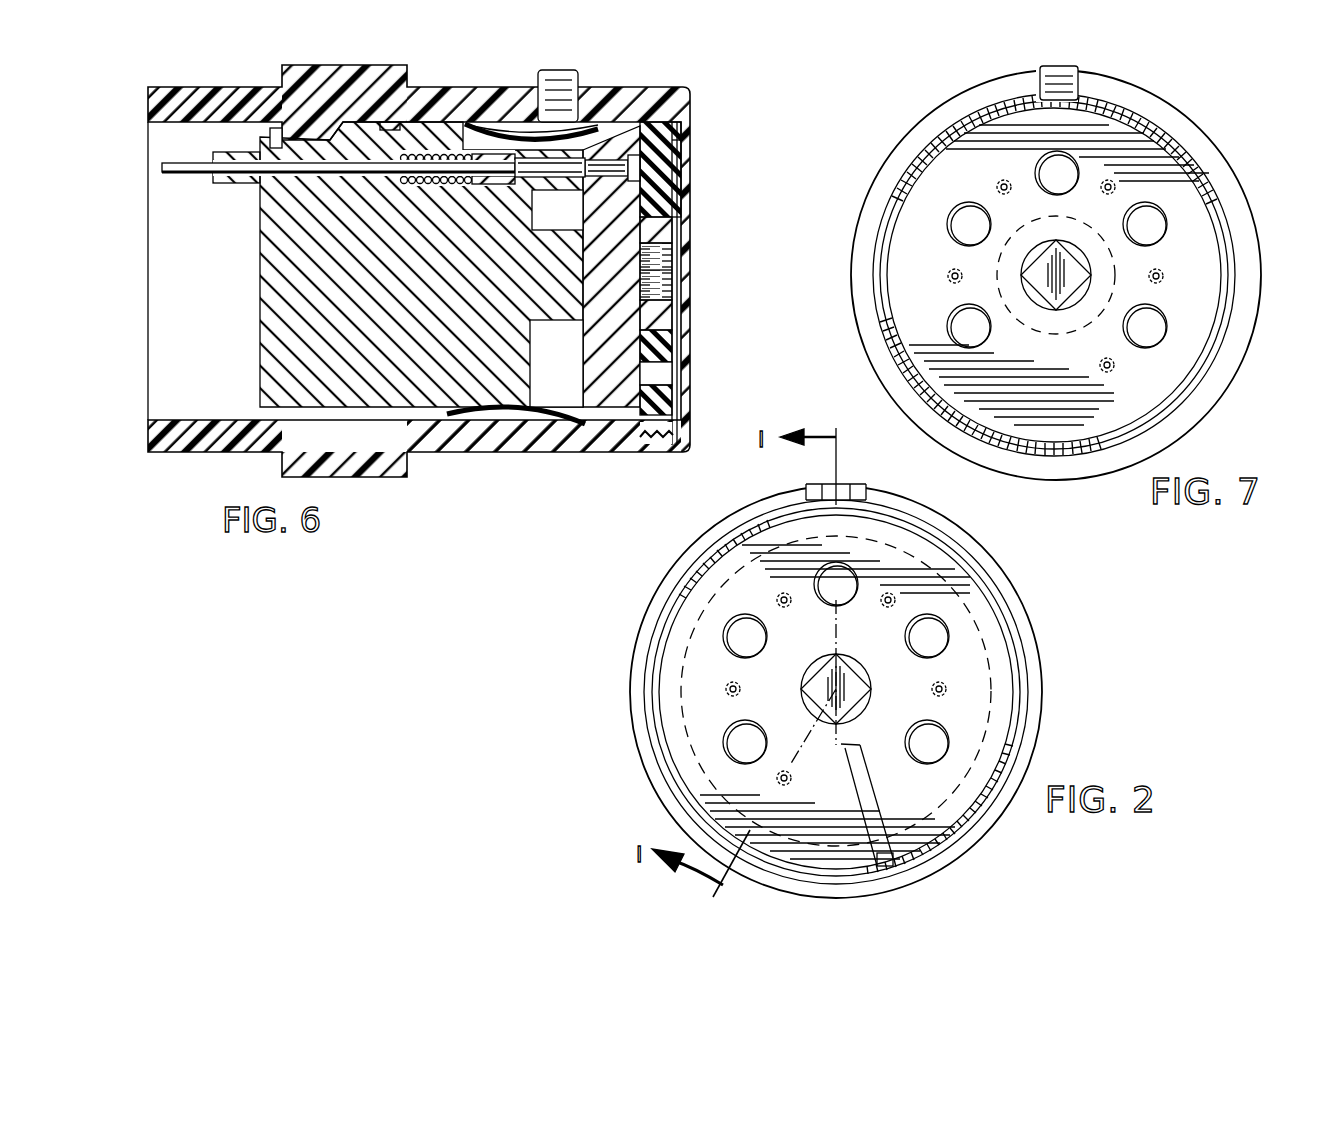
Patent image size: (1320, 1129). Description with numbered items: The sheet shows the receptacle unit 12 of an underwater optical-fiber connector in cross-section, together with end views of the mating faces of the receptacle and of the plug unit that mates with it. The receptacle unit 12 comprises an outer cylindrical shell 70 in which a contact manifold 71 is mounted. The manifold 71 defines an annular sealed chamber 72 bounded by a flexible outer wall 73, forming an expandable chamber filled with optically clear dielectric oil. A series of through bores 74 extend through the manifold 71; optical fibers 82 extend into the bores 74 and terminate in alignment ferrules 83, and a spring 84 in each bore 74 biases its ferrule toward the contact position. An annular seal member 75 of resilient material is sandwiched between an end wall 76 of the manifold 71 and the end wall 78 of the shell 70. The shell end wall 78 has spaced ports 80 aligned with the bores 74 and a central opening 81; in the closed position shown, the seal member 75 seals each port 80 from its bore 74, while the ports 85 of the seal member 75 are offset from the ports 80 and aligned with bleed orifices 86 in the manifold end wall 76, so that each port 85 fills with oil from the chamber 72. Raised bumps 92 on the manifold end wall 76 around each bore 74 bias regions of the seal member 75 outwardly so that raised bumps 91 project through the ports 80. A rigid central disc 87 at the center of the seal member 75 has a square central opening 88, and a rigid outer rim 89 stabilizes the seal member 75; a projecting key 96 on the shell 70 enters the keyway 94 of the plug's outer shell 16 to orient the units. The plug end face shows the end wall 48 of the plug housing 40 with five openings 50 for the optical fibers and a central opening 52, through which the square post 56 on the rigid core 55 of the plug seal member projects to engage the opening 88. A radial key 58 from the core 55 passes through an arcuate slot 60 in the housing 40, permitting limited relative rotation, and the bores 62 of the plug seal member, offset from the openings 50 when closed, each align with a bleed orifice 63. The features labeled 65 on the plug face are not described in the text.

In FIG. 6, the receptacle unit 12 is at (434, 468).
In FIG. 2, the outer shell 16 is at (632, 690).
In FIG. 2, the outer cylindrical housing 40 is at (1015, 652).
In FIG. 2, the end wall 48 is at (975, 722).
In FIG. 2, the openings 50 is at (756, 616).
In FIG. 2, the central opening 52 is at (804, 693).
In FIG. 2, the central core 55 is at (826, 633).
In FIG. 2, the post 56 is at (840, 698).
In FIG. 2, the radial key 58 is at (878, 772).
In FIG. 2, the arcuate slot 60 is at (790, 884).
In FIG. 2, the bores 62 is at (933, 688).
In FIG. 2, the bleed orifices 63 is at (943, 683).
In FIG. 2, the hole 65 is at (736, 648).
In FIG. 6, the outer cylindrical shell 70 is at (507, 440).
In FIG. 7, the outer cylindrical shell 70 is at (1240, 214).
In FIG. 6, the contact manifold 71 is at (268, 340).
In FIG. 6, the annular sealed chamber 72 is at (568, 356).
In FIG. 6, the flexible outer wall 73 is at (565, 424).
In FIG. 6, the through bores 74 is at (343, 176).
In FIG. 6, the annular seal member 75 is at (660, 348).
In FIG. 6, the manifold end wall 76 is at (592, 352).
In FIG. 6, the shell end wall 78 is at (672, 403).
In FIG. 7, the shell end wall 78 is at (1207, 290).
In FIG. 6, the ports 80 is at (678, 198).
In FIG. 7, the ports 80 is at (948, 237).
In FIG. 6, the central opening 81 is at (677, 247).
In FIG. 7, the central opening 81 is at (1040, 301).
In FIG. 6, the optical fibers 82 is at (200, 174).
In FIG. 6, the alignment ferrules 83 is at (550, 194).
In FIG. 6, the spring 84 is at (436, 184).
In FIG. 6, the ports 85 is at (665, 373).
In FIG. 7, the ports 85 is at (1106, 190).
In FIG. 6, the bleed orifices 86 is at (674, 438).
In FIG. 6, the central disc 87 is at (655, 308).
In FIG. 7, the central disc 87 is at (1116, 262).
In FIG. 6, the central opening 88 is at (642, 290).
In FIG. 7, the central opening 88 is at (1060, 294).
In FIG. 6, the outer rim 89 is at (663, 110).
In FIG. 6, the raised bumps 91 is at (672, 155).
In FIG. 7, the raised bumps 91 is at (967, 212).
In FIG. 6, the raised bumps 92 is at (672, 215).
In FIG. 2, the keyway 94 is at (845, 492).
In FIG. 6, the key 96 is at (578, 80).
In FIG. 7, the key 96 is at (1030, 76).